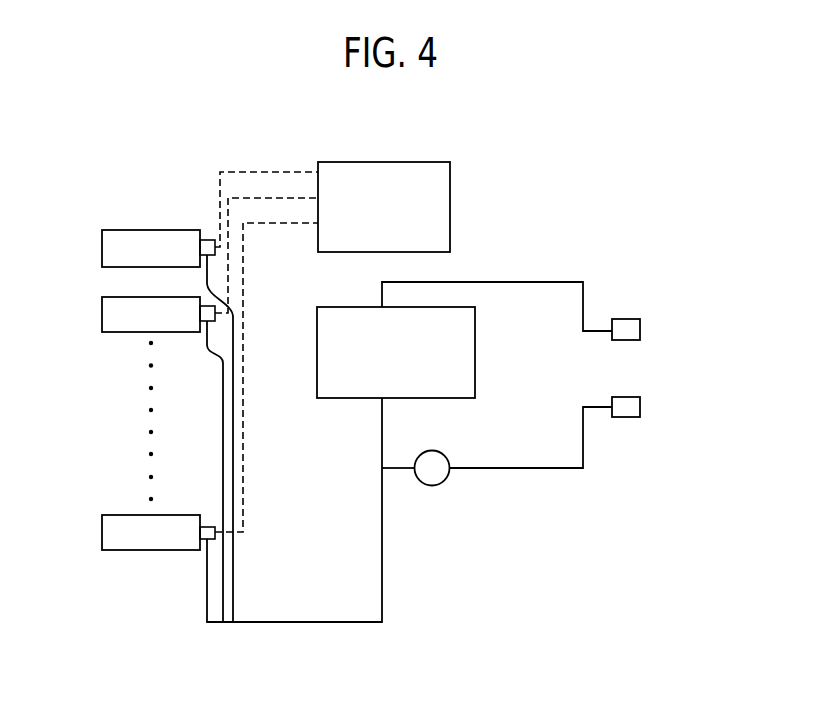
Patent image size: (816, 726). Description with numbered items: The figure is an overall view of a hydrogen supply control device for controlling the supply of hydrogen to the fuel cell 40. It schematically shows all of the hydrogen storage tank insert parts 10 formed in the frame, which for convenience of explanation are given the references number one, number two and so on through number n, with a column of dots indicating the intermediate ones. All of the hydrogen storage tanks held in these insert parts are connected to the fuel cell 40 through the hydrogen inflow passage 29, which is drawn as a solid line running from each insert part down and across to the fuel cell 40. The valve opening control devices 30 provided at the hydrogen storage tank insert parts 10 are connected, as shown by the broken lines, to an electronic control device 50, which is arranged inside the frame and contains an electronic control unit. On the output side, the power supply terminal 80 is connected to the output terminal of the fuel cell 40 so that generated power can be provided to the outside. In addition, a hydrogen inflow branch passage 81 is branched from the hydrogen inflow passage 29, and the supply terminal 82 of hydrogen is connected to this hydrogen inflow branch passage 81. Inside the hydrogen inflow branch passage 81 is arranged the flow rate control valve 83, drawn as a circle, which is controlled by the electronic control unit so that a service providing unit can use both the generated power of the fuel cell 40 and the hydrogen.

The hydrogen storage tank insert part 10 is at (102, 250).
The hydrogen inflow passage 29 is at (316, 623).
The valve opening control device 30 is at (213, 240).
The fuel cell 40 is at (460, 378).
The electronic control device 50 is at (435, 210).
The power supply terminal 80 is at (636, 326).
The hydrogen inflow branch passage 81 is at (553, 468).
The supply terminal of hydrogen 82 is at (636, 406).
The flow rate control valve 83 is at (442, 481).